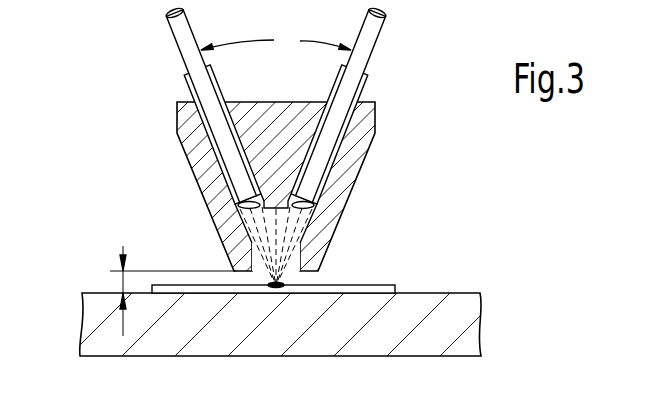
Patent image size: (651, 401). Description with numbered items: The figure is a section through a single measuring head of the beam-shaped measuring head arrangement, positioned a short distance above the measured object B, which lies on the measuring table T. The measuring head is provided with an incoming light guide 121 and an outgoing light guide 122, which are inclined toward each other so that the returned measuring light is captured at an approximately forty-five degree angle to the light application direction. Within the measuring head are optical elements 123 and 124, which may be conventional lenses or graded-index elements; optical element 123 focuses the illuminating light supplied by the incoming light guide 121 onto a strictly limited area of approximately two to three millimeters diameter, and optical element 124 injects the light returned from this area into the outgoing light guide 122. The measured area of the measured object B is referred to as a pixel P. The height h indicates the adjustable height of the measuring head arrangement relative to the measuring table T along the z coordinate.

The incoming light guide 121 is at (178, 43).
The outgoing light guide 122 is at (376, 36).
The optical element 123 is at (238, 205).
The optical element 124 is at (314, 206).
The height h is at (123, 284).
The measuring table T is at (95, 339).
The measured object B is at (372, 293).
The pixel P is at (276, 290).